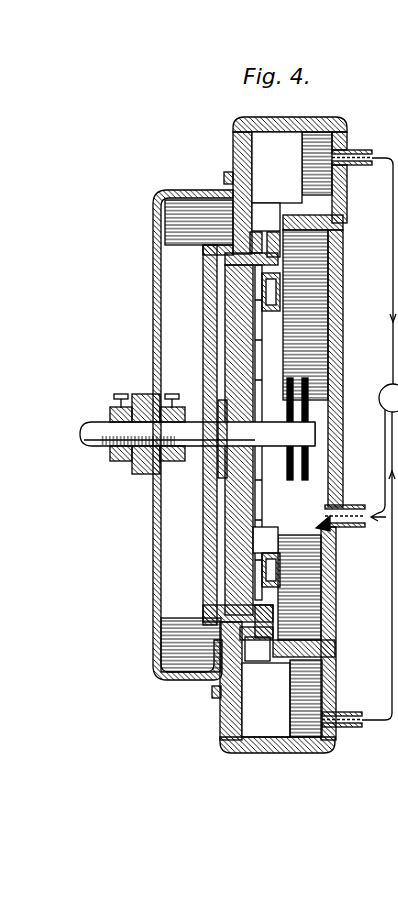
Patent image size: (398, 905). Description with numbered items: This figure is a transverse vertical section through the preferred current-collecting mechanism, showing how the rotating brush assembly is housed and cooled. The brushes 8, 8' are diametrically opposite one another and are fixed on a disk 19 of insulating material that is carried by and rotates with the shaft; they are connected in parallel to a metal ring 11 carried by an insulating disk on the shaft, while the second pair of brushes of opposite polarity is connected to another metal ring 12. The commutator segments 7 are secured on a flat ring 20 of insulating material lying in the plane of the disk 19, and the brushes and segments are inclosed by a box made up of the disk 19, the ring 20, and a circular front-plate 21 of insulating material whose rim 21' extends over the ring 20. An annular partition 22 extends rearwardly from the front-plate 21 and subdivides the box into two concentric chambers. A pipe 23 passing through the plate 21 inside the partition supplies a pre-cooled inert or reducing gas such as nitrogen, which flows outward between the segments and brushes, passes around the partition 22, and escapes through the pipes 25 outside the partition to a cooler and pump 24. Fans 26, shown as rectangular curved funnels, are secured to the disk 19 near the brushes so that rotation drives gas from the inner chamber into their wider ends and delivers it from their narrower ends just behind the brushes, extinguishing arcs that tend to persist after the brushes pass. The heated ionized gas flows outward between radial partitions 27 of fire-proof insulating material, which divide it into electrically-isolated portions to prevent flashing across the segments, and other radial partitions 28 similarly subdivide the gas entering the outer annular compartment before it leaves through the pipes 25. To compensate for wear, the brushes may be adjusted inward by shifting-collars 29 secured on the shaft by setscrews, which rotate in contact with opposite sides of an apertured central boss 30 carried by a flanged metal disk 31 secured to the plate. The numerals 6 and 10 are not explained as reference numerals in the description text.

The field winding 6 is at (210, 240).
The commutator segments 7 is at (262, 340).
The brush 8 is at (321, 315).
The brush 8' is at (316, 587).
The shaft 10 is at (98, 447).
The metal ring 11 is at (290, 380).
The metal ring 12 is at (302, 478).
The disk 19 is at (225, 322).
The flat ring 20 is at (233, 141).
The front-plate 21 is at (345, 436).
The rim 21' is at (290, 145).
The annular partition 22 is at (316, 226).
The pipe 23 is at (350, 502).
The cooler and pump 24 is at (380, 403).
The pipes 25 is at (360, 152).
The fans 26 is at (282, 291).
The radial partitions 27 is at (255, 214).
The radial partitions 28 is at (252, 723).
The shifting-collars 29 is at (205, 278).
The central boss 30 is at (141, 472).
The flanged metal disk 31 is at (155, 293).